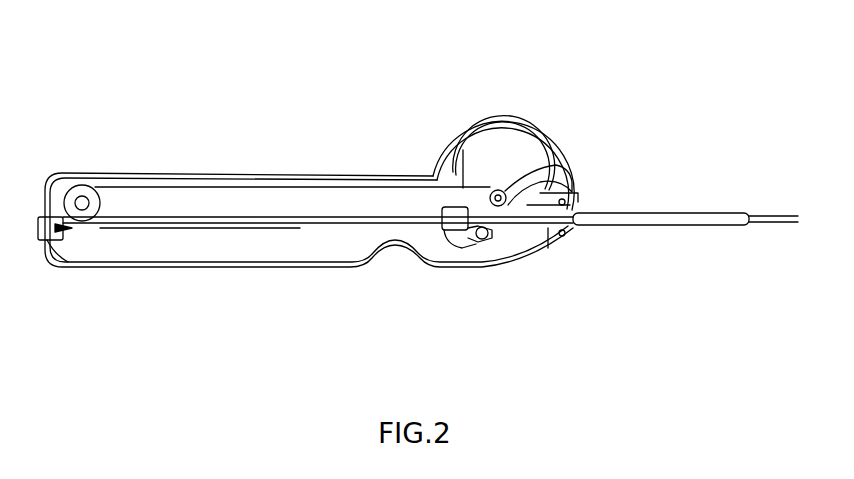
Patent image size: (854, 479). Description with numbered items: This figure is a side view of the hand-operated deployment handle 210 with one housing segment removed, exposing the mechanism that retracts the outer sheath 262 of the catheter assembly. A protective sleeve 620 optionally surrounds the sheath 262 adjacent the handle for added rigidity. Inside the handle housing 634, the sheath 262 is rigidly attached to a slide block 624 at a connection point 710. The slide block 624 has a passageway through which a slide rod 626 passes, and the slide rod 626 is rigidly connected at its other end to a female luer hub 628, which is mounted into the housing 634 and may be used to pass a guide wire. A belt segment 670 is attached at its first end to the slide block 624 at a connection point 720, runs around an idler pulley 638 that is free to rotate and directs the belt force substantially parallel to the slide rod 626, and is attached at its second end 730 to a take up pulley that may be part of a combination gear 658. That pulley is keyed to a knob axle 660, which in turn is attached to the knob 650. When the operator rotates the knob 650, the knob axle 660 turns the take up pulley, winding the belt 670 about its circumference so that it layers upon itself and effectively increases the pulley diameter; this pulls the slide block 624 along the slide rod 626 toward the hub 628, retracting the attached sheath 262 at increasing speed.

The handle 210 is at (166, 80).
The outer sheath 262 is at (527, 230).
The protective sleeve 620 is at (672, 227).
The slide block 624 is at (447, 232).
The slide rod 626 is at (255, 228).
The female luer hub 628 is at (47, 243).
The left handle housing 634 is at (157, 270).
The idler pulley 638 is at (103, 190).
The knob 650 is at (503, 125).
The combination gear 658 is at (506, 193).
The knob axle 660 is at (513, 193).
The belt segment 670 is at (462, 190).
The connection point 710 is at (515, 225).
The connection point 720 is at (442, 213).
The second end 730 is at (582, 197).